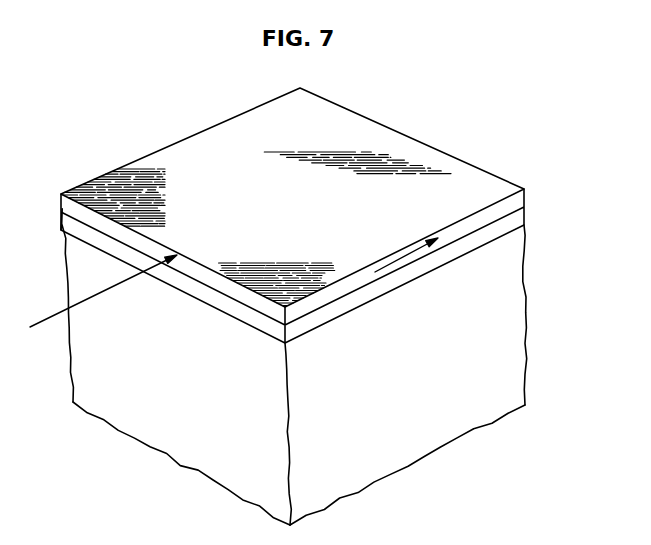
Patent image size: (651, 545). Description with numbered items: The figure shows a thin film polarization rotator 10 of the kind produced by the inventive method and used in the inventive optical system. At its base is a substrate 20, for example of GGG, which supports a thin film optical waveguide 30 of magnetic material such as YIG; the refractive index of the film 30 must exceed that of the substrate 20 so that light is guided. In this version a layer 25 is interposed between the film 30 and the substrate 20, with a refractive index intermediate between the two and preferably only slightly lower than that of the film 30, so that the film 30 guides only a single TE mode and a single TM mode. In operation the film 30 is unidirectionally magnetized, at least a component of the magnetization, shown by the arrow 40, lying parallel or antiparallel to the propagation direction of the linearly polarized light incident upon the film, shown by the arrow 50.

The polarization rotator 10 is at (413, 94).
The substrate 20 is at (493, 330).
The layer 25 is at (510, 223).
The thin film optical waveguide 30 is at (188, 160).
The magnetization arrow 40 is at (407, 262).
The linearly polarized light arrow 50 is at (120, 287).